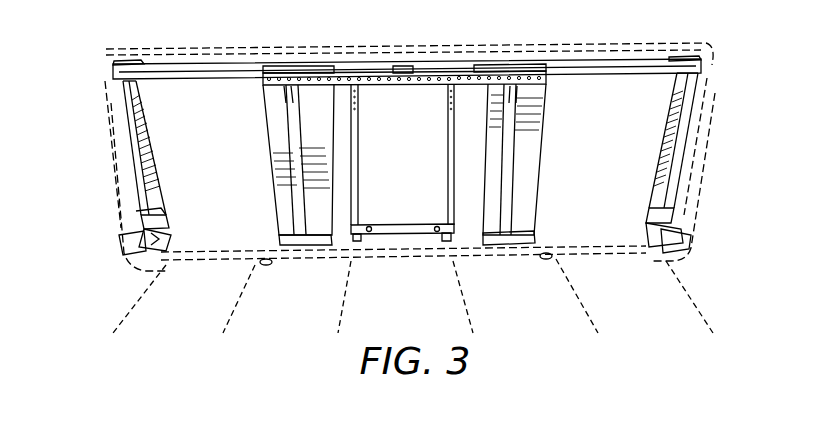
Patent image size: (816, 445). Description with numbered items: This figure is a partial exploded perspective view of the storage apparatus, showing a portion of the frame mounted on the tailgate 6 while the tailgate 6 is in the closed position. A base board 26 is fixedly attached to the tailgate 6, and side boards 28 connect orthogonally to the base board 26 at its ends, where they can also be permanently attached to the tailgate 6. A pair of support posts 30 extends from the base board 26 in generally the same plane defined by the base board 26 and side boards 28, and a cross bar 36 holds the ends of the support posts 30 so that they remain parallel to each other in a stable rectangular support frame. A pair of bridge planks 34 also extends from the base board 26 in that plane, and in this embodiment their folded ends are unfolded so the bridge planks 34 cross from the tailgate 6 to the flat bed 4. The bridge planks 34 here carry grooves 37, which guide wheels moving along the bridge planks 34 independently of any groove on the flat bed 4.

The flat bed 4 is at (411, 298).
The tailgate 6 is at (220, 158).
The base board 26 is at (585, 60).
The side boards 28 is at (138, 125).
The support posts 30 is at (447, 128).
The bridge planks 34 is at (282, 183).
The cross bar 36 is at (373, 222).
The grooves 37 is at (283, 92).